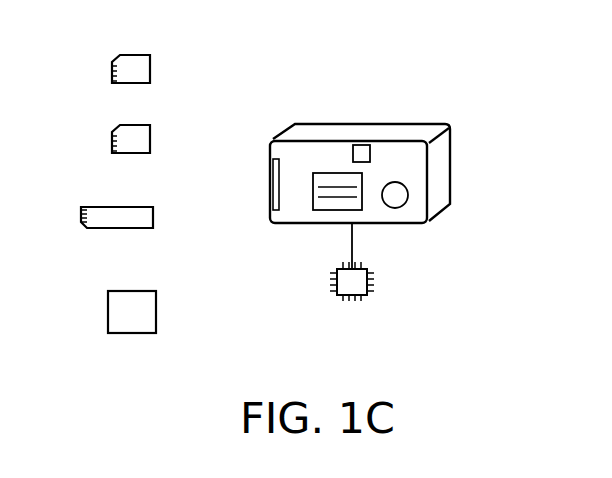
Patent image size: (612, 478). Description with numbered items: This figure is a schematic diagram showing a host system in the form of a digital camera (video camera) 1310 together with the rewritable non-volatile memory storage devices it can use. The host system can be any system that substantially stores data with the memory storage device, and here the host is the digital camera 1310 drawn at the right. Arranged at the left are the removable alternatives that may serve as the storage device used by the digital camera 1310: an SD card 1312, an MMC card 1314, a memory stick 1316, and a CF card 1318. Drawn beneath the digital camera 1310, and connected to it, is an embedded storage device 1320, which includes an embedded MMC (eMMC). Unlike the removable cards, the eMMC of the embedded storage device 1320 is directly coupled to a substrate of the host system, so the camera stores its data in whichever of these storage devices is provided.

The digital camera 1310 is at (450, 163).
The SD card 1312 is at (150, 62).
The MMC card 1314 is at (150, 132).
The memory stick 1316 is at (153, 216).
The CF card 1318 is at (156, 307).
The embedded storage device 1320 is at (374, 283).